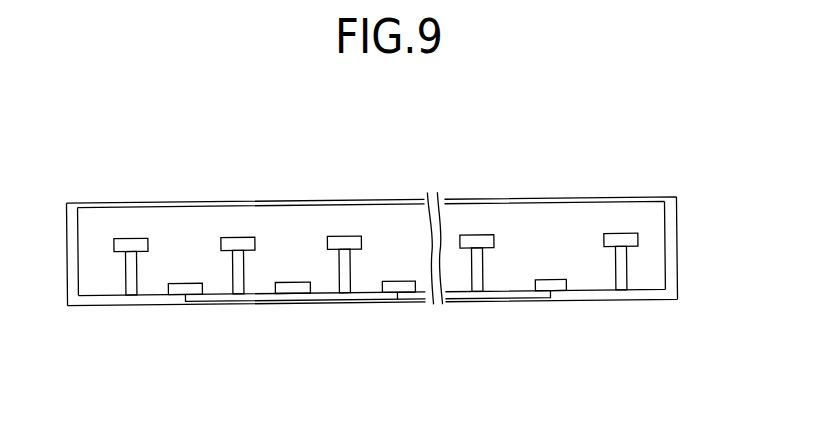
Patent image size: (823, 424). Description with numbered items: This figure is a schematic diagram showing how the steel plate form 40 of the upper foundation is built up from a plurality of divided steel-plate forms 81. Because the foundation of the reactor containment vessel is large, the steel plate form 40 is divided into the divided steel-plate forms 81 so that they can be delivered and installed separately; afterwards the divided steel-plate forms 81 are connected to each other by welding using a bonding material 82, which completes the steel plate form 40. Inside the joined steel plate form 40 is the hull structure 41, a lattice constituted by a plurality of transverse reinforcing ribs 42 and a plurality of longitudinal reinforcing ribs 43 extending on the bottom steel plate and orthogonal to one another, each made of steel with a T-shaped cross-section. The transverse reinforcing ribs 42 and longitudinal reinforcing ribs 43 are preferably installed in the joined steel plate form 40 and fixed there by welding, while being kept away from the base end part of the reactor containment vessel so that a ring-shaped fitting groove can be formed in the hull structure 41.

The steel plate form 40 is at (568, 153).
The hull structure 41 is at (566, 220).
The transverse reinforcing ribs 42 is at (344, 236).
The longitudinal reinforcing ribs 43 is at (477, 236).
The divided steel-plate forms 81 is at (228, 303).
The bonding material 82 is at (295, 282).